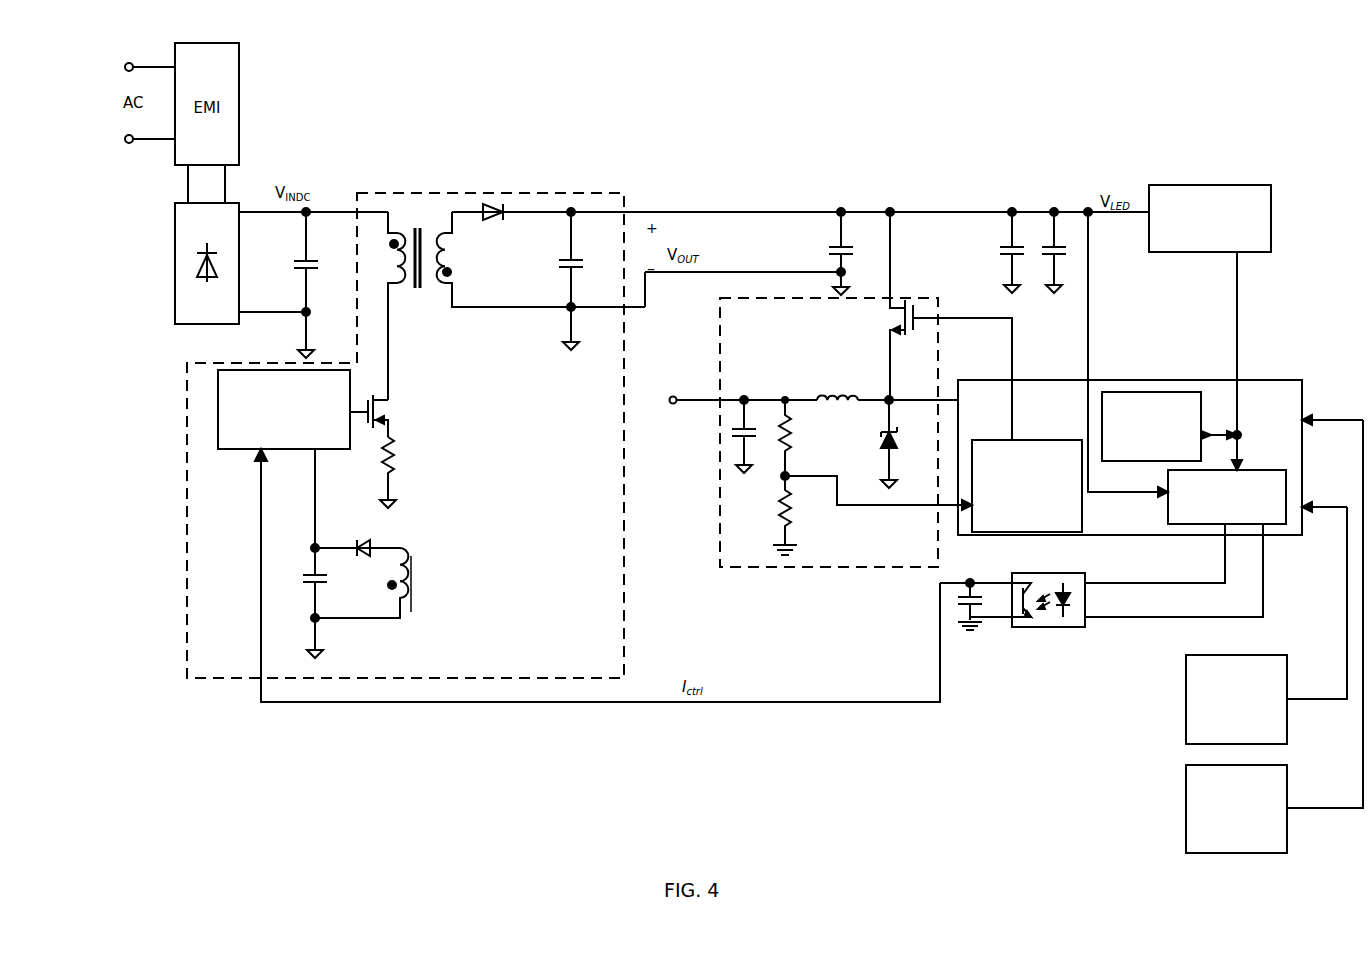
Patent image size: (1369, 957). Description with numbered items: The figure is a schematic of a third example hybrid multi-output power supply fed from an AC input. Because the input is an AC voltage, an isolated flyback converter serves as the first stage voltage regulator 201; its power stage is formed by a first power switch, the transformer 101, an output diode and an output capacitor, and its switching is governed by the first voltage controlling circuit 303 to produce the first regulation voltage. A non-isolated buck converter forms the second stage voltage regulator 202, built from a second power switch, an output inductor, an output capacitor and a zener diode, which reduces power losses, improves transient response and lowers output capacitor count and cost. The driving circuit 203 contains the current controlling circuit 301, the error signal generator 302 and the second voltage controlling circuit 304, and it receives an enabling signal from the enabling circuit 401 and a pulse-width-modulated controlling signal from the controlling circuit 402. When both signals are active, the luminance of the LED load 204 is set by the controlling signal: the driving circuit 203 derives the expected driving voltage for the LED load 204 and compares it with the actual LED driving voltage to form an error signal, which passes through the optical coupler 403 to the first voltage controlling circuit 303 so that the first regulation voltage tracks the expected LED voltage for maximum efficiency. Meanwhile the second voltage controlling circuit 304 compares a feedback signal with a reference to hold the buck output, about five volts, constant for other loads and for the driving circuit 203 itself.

The transformer 101 is at (417, 234).
The first stage voltage regulator 201 is at (416, 435).
The second stage voltage regulator 202 is at (833, 389).
The driving circuit 203 is at (1160, 373).
The LED load 204 is at (1210, 218).
The current controlling circuit 301 is at (1151, 426).
The error signal generator 302 is at (1227, 497).
The first voltage controlling circuit 303 is at (284, 409).
The second voltage controlling circuit 304 is at (1027, 486).
The enabling circuit 401 is at (1236, 809).
The controlling circuit 402 is at (1236, 699).
The optical coupler 403 is at (1049, 627).